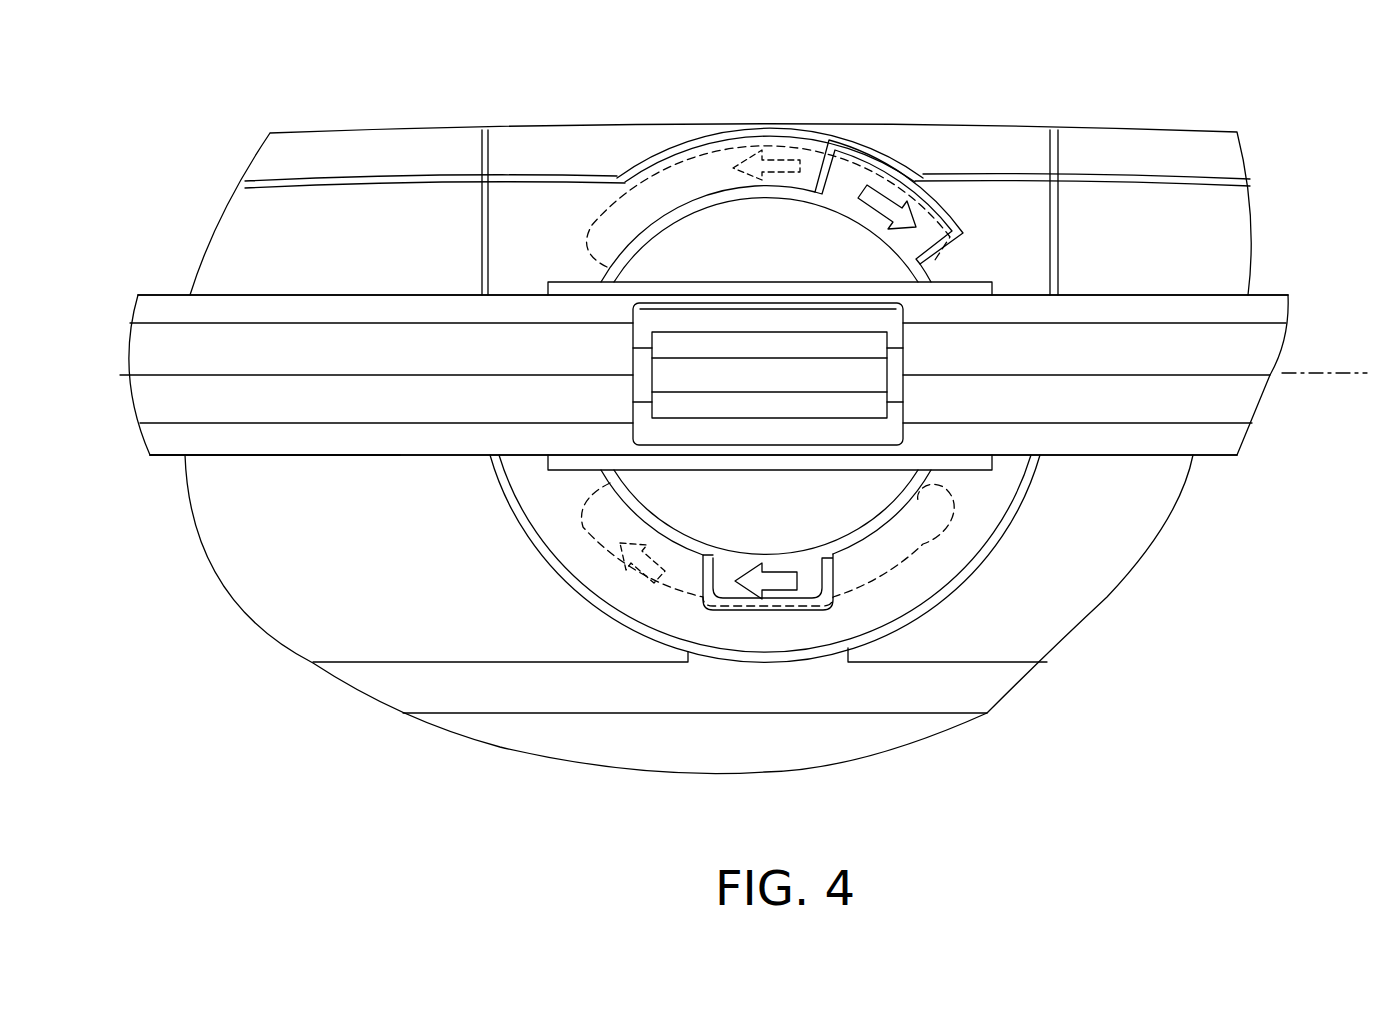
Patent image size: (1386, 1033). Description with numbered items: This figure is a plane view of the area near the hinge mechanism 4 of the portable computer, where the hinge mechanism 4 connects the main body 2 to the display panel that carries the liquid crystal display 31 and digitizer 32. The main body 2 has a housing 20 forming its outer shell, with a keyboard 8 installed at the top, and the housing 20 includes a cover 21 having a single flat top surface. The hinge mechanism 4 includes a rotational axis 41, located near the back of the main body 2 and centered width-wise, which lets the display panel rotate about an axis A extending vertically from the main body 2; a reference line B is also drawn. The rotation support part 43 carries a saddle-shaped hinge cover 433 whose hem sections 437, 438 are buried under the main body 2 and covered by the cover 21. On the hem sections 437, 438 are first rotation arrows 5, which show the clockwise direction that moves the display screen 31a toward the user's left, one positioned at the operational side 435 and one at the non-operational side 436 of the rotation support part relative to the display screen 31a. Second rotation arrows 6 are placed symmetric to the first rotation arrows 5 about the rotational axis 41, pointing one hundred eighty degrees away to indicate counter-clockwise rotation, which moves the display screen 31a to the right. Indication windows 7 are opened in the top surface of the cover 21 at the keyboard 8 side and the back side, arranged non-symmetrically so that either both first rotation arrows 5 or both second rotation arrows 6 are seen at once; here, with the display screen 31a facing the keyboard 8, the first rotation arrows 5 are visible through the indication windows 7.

The main body 2 is at (1157, 157).
The hinge mechanism 4 is at (605, 165).
The first rotation arrows 5 is at (876, 196).
The second rotation arrows 6 is at (777, 150).
The indication windows 7 is at (948, 231).
The keyboard 8 is at (933, 725).
The housing 20 is at (1092, 140).
The cover 21 is at (973, 138).
The liquid crystal display 31 is at (266, 393).
The digitizer 32 is at (713, 375).
The display screen 31a is at (361, 470).
The rotational axis 41 is at (918, 502).
The rotation support part 43 is at (570, 280).
The hinge cover 433 is at (603, 478).
The operational side 435 is at (699, 475).
The non-operational side 436 is at (695, 276).
The hem section 437 is at (657, 583).
The hem section 438 is at (690, 157).
The axis A is at (763, 370).
The reference line B is at (1340, 393).